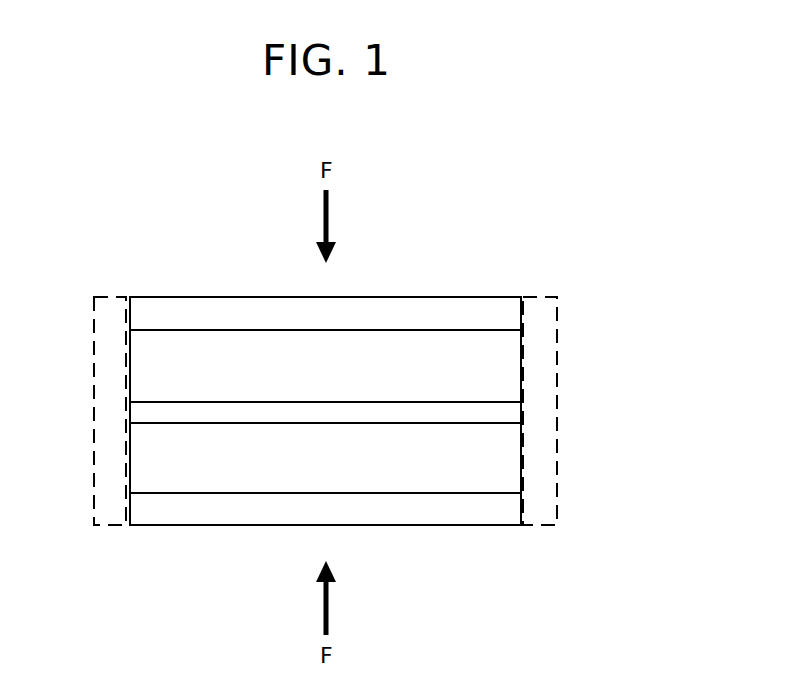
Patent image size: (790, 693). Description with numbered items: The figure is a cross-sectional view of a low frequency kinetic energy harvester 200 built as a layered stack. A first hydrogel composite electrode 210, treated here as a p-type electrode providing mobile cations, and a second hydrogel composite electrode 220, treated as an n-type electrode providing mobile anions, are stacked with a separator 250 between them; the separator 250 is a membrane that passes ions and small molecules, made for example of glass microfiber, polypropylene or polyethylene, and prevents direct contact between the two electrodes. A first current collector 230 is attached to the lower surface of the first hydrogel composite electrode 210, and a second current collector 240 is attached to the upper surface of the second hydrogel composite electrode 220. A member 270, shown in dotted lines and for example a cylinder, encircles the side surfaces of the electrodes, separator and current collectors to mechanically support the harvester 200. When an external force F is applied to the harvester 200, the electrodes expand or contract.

The low frequency kinetic energy harvester 200 is at (556, 260).
The first hydrogel composite electrode 210 is at (517, 460).
The second hydrogel composite electrode 220 is at (517, 366).
The first current collector 230 is at (517, 510).
The second current collector 240 is at (517, 313).
The separator 250 is at (517, 413).
The member 270 is at (110, 525).